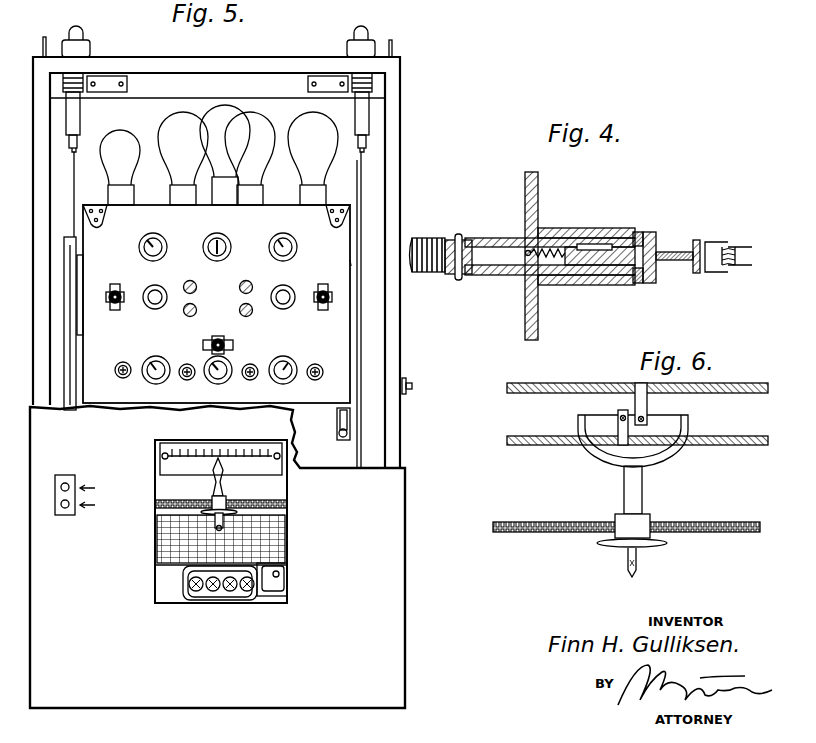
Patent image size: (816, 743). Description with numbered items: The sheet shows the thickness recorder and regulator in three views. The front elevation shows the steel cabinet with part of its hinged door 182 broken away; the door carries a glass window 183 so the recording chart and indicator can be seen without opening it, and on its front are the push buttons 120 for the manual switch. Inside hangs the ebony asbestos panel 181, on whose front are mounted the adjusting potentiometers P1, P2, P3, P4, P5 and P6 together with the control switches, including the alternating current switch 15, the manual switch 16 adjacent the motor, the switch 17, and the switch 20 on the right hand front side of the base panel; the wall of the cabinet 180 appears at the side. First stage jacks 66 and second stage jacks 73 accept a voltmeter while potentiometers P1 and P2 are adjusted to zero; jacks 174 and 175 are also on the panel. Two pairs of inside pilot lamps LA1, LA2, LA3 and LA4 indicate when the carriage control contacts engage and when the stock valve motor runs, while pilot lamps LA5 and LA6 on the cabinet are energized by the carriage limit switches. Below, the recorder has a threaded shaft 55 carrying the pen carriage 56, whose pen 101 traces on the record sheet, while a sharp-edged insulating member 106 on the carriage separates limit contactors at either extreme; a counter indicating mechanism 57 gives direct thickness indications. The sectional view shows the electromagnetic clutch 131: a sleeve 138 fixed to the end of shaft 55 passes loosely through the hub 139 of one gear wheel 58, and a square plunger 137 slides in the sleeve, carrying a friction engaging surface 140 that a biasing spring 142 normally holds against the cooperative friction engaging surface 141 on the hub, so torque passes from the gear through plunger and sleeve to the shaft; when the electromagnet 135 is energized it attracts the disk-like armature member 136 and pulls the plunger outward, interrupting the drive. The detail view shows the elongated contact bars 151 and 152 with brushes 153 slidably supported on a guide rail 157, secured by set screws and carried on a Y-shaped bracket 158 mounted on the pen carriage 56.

In FIG. 5, the pilot lamp LA5 is at (84, 31).
In FIG. 5, the pilot lamp LA6 is at (353, 32).
In FIG. 5, the pilot lamp LA1 is at (247, 317).
In FIG. 5, the pilot lamp LA2 is at (195, 306).
In FIG. 5, the pilot lamp LA3 is at (251, 283).
In FIG. 5, the pilot lamp LA4 is at (195, 283).
In FIG. 5, the first stage potentiometer P1 is at (163, 361).
In FIG. 5, the second stage potentiometer P2 is at (294, 361).
In FIG. 5, the potentiometer P3 is at (230, 362).
In FIG. 5, the potentiometer P4 is at (292, 243).
In FIG. 5, the potentiometer P5 is at (161, 243).
In FIG. 5, the potentiometer P6 is at (226, 243).
In FIG. 5, the alternating current switch 15 is at (111, 289).
In FIG. 5, the manual switch 16 is at (219, 339).
In FIG. 5, the switch 17 is at (326, 290).
In FIG. 5, the switch 20 is at (337, 432).
In FIG. 5, the threaded recorder shaft 55 is at (192, 500).
In FIG. 4, the threaded recorder shaft 55 is at (440, 275).
In FIG. 6, the threaded recorder shaft 55 is at (556, 521).
In FIG. 5, the pen carriage 56 is at (229, 500).
In FIG. 6, the pen carriage 56 is at (616, 514).
In FIG. 5, the counter indicating mechanism 57 is at (237, 600).
In FIG. 4, the gear wheel 58 is at (539, 196).
In FIG. 5, the plug-in jack 66 is at (123, 378).
In FIG. 5, the plug-in jack 73 is at (250, 380).
In FIG. 5, the pen 101 is at (223, 529).
In FIG. 6, the pen 101 is at (639, 560).
In FIG. 5, the insulating member 106 is at (200, 512).
In FIG. 6, the insulating member 106 is at (667, 544).
In FIG. 5, the push buttons 120 is at (62, 475).
In FIG. 4, the electromagnetic clutch 131 is at (596, 311).
In FIG. 4, the electromagnet 135 is at (728, 270).
In FIG. 4, the armature member 136 is at (698, 280).
In FIG. 4, the plunger 137 is at (642, 283).
In FIG. 4, the sleeve 138 is at (516, 276).
In FIG. 4, the gear hub 139 is at (590, 228).
In FIG. 4, the friction engaging surface 140 is at (652, 230).
In FIG. 4, the friction engaging surface 141 is at (638, 232).
In FIG. 4, the biasing spring 142 is at (531, 246).
In FIG. 6, the contact bar 151 is at (546, 437).
In FIG. 6, the contact bar 152 is at (544, 395).
In FIG. 6, the brushes 153 is at (648, 410).
In FIG. 6, the guide rail 157 is at (603, 415).
In FIG. 6, the Y-shaped bracket 158 is at (625, 470).
In FIG. 5, the jack 174 is at (155, 309).
In FIG. 5, the jack 175 is at (283, 309).
In FIG. 5, the cabinet wall 180 is at (395, 350).
In FIG. 5, the panel 181 is at (351, 265).
In FIG. 5, the hinged door 182 is at (397, 496).
In FIG. 5, the glass window 183 is at (229, 535).